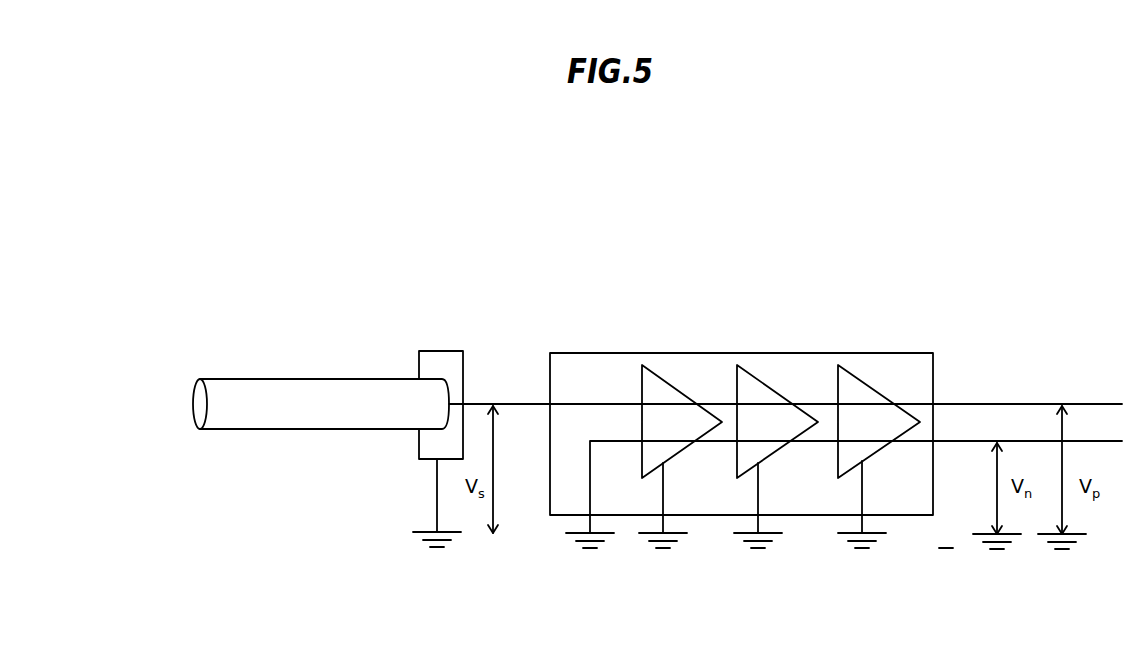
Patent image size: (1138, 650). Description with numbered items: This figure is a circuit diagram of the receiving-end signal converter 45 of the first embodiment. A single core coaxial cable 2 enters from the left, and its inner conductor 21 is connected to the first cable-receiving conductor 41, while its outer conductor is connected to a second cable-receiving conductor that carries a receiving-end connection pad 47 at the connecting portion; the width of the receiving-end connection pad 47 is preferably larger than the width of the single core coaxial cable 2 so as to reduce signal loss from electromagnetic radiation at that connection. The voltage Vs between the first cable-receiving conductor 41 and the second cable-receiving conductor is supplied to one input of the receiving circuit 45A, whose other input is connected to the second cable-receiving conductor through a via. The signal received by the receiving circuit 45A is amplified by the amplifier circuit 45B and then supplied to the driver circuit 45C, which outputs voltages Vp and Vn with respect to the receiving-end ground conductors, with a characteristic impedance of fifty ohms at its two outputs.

The single core coaxial cable 2 is at (290, 370).
The inner conductor 21 is at (450, 405).
The first cable-receiving conductor 41 is at (521, 406).
The receiving-end signal converter 45 is at (938, 308).
The receiving circuit 45A is at (640, 380).
The amplifier circuit 45B is at (770, 377).
The driver circuit 45C is at (890, 380).
The receiving-end connection pad 47 is at (443, 365).